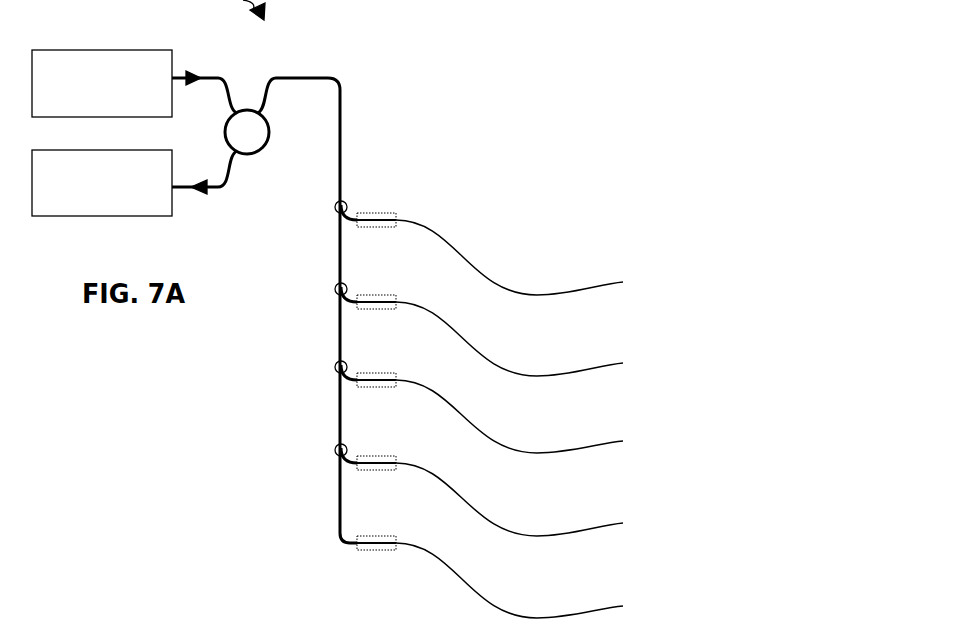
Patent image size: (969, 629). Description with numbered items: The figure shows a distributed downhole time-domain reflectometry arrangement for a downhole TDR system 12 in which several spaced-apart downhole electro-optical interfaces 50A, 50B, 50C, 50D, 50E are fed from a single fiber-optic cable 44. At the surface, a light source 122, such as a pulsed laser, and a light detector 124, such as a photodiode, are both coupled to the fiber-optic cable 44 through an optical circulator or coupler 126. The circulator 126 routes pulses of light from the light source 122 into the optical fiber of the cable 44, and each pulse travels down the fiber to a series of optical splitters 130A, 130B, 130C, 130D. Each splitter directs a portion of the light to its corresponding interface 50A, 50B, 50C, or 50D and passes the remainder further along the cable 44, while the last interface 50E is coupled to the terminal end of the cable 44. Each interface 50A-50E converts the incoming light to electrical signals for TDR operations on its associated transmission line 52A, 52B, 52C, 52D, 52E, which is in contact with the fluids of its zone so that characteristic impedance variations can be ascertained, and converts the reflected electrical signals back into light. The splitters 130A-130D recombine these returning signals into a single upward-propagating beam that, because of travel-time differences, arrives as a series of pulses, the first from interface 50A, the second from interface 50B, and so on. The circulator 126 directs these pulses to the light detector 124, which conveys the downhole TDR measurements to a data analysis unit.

The downhole TDR system 12 is at (239, 616).
The fiber-optic cable 44 is at (303, 78).
The downhole electro-optical interface 50A is at (387, 210).
The downhole electro-optical interface 50B is at (387, 292).
The downhole electro-optical interface 50C is at (387, 370).
The downhole electro-optical interface 50D is at (387, 453).
The downhole electro-optical interface 50E is at (387, 533).
The transmission line 52A is at (562, 290).
The transmission line 52B is at (562, 371).
The transmission line 52C is at (562, 448).
The transmission line 52D is at (562, 531).
The transmission line 52E is at (562, 613).
The light source 122 is at (172, 62).
The light detector 124 is at (172, 207).
The optical circulator or coupler 126 is at (264, 148).
The optical splitter 130A is at (335, 207).
The optical splitter 130B is at (335, 289).
The optical splitter 130C is at (335, 367).
The optical splitter 130D is at (335, 450).